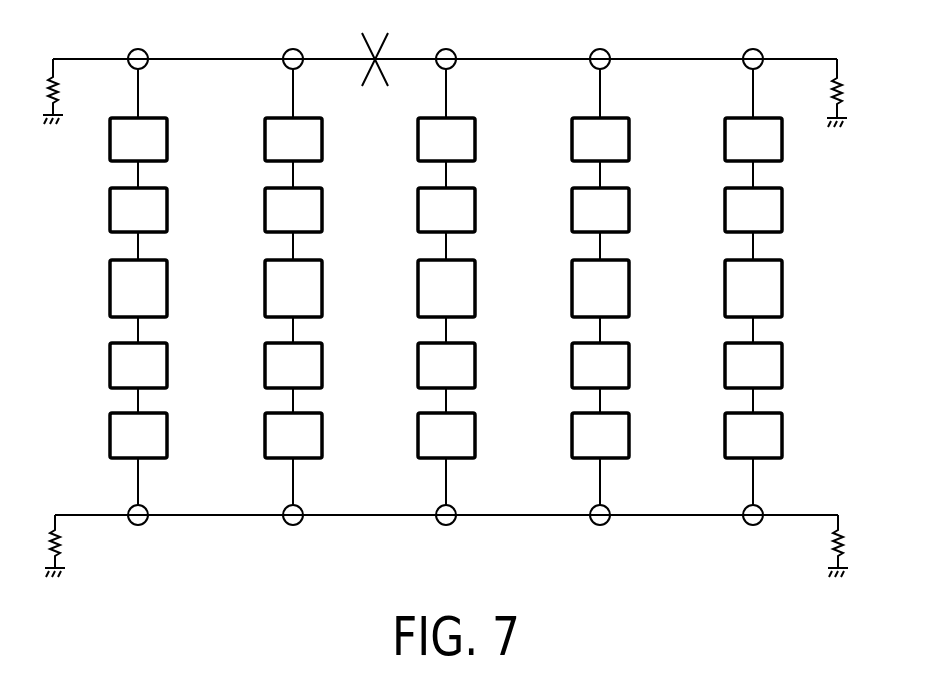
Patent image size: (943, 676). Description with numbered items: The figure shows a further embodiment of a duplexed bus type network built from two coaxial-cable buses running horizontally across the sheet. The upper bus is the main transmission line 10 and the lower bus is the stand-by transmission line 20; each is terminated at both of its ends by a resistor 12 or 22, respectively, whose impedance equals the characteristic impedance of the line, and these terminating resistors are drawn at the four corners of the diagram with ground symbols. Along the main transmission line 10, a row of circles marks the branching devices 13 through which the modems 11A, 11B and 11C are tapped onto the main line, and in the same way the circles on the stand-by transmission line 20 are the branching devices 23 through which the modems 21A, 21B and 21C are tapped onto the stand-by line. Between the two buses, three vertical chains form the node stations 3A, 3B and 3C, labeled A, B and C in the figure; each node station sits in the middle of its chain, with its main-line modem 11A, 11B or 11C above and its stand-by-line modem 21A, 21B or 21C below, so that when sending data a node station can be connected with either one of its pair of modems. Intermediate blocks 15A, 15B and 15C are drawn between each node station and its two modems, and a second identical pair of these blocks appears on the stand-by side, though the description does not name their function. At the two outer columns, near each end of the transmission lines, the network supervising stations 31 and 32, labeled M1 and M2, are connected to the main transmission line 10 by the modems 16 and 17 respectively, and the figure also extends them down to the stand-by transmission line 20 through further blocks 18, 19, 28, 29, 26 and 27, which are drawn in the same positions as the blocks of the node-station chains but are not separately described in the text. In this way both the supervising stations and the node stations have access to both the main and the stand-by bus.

The main transmission line 10 is at (245, 34).
The resistor 12 is at (833, 90).
The branching device 13 is at (602, 58).
The modem 16 is at (167, 155).
The modem 17 is at (782, 155).
The interface circuit 18 is at (167, 226).
The interface circuit 19 is at (782, 226).
The stand-by transmission line 20 is at (182, 518).
The resistor 22 is at (835, 547).
The branching device 23 is at (602, 526).
The coupling circuit 26 is at (167, 452).
The coupling circuit 27 is at (782, 452).
The interface circuit 28 is at (167, 382).
The interface circuit 29 is at (782, 382).
The network supervising station 31 is at (167, 311).
The network supervising station 32 is at (782, 311).
The modem 11A is at (322, 155).
The modem 11B is at (475, 155).
The modem 11C is at (629, 155).
The interface circuit of station A 15A is at (322, 226).
The interface circuit of station B 15B is at (475, 226).
The interface circuit of station C 15C is at (629, 226).
The node station 3A is at (322, 311).
The node station 3B is at (475, 311).
The node station 3C is at (629, 311).
The modem 21A is at (322, 452).
The modem 21B is at (475, 452).
The modem 21C is at (629, 452).